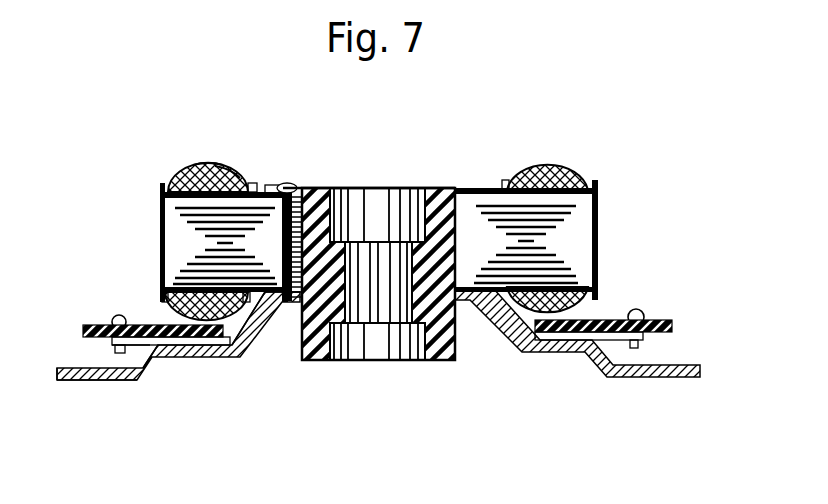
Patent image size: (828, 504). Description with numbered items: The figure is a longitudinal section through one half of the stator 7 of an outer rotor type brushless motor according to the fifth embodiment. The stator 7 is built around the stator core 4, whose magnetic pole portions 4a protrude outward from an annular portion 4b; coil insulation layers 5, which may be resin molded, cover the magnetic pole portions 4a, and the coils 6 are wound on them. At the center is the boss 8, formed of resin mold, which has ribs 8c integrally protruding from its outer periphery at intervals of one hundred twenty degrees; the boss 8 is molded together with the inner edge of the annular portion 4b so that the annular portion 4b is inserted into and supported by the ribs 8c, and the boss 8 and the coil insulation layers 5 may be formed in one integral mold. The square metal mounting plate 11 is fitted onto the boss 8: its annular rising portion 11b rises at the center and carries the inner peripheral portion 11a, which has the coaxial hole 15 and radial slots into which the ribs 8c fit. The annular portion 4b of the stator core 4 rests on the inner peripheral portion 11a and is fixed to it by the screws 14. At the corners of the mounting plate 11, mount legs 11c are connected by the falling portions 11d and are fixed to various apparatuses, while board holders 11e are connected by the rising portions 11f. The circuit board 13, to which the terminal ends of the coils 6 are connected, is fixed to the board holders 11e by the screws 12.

The stator core 4 is at (193, 243).
The magnetic pole portions 4a is at (173, 215).
The annular portion 4b is at (263, 190).
The coil insulation layers 5 is at (187, 170).
The coils 6 is at (203, 165).
The stator 7 is at (224, 160).
The boss 8 is at (442, 358).
The ribs 8c is at (463, 292).
The mounting plate 11 is at (210, 368).
The inner peripheral portion 11a is at (276, 303).
The rising portion 11b is at (248, 337).
The mount legs 11c is at (65, 382).
The falling portions 11d is at (163, 373).
The board holders 11e is at (110, 342).
The rising portions 11f is at (57, 367).
The screws 12 is at (112, 320).
The circuit board 13 is at (157, 325).
The screws 14 is at (289, 186).
The hole 15 is at (320, 295).